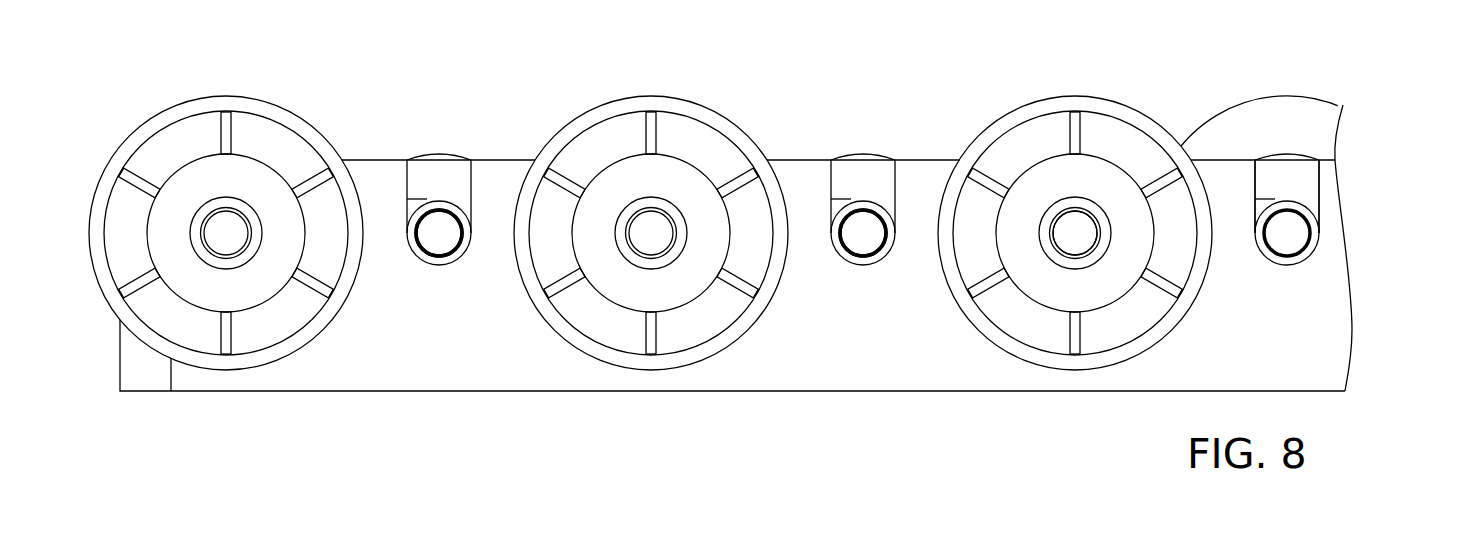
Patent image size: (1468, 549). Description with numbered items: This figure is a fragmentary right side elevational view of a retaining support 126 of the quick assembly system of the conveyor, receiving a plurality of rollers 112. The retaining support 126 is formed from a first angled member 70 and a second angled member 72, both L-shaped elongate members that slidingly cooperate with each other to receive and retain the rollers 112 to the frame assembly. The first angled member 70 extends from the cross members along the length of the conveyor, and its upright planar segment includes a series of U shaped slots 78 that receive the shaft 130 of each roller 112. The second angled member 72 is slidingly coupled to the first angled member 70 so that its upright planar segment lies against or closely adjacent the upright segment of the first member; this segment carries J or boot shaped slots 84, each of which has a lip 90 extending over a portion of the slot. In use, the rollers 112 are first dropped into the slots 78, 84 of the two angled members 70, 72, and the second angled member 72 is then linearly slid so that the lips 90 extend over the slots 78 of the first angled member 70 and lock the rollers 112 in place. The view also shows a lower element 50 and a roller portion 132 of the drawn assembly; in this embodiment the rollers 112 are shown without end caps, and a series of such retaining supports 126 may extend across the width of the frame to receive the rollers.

The base 50 is at (282, 378).
The first angled member 70 is at (1307, 292).
The second angled member 72 is at (1305, 197).
The U shaped slot 78 is at (863, 257).
The J or boot shaped slot 84 is at (838, 178).
The lip 90 is at (410, 183).
The roller 112 is at (1325, 98).
The retaining support 126 is at (1400, 163).
The shaft 130 is at (440, 232).
The roller hub 132 is at (1110, 328).